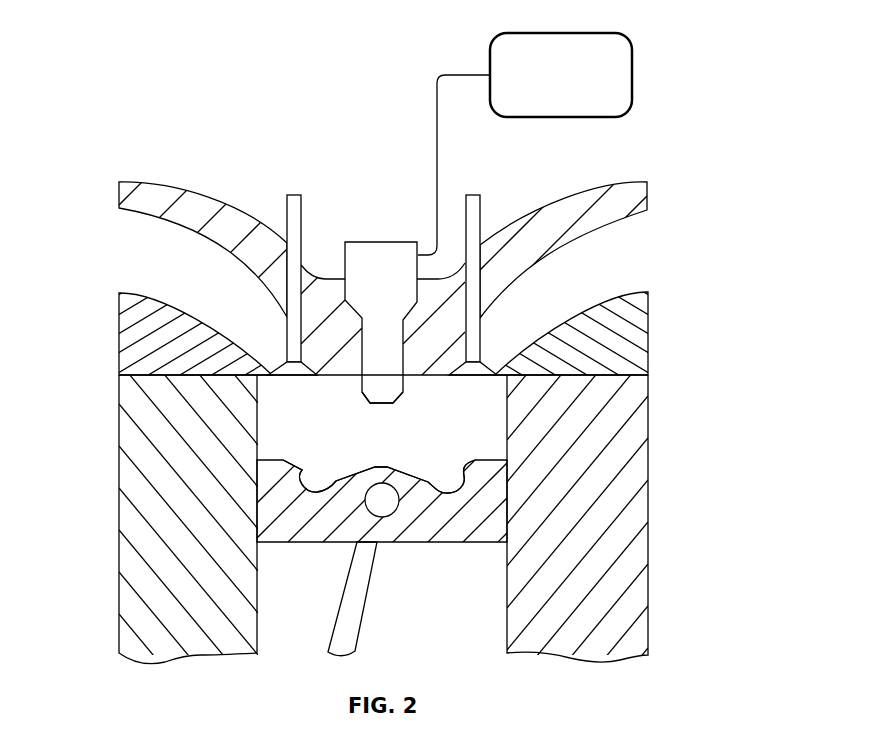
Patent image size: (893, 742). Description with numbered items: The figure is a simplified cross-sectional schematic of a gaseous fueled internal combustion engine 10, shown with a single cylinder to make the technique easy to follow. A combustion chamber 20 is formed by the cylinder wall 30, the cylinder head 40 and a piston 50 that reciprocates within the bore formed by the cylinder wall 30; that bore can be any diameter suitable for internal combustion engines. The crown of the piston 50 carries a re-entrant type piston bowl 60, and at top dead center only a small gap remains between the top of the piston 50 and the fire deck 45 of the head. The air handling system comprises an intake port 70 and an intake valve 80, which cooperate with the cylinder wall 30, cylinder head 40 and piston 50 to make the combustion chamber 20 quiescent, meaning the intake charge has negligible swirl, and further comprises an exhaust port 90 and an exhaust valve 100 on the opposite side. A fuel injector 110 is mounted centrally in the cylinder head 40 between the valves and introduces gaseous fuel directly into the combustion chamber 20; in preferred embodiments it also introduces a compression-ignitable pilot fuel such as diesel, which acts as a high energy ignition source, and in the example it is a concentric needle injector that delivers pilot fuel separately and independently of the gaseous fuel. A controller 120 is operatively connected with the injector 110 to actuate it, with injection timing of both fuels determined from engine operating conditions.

The gaseous fueled internal combustion engine 10 is at (770, 176).
The combustion chamber 20 is at (395, 444).
The cylinder wall 30 is at (257, 422).
The cylinder head 40 is at (118, 333).
The fire deck 45 is at (423, 382).
The piston 50 is at (450, 542).
The re-entrant type piston bowl 60 is at (447, 468).
The intake port 70 is at (598, 271).
The intake valve 80 is at (480, 210).
The exhaust port 90 is at (147, 265).
The exhaust valve 100 is at (302, 220).
The fuel injector 110 is at (380, 240).
The controller 120 is at (582, 89).